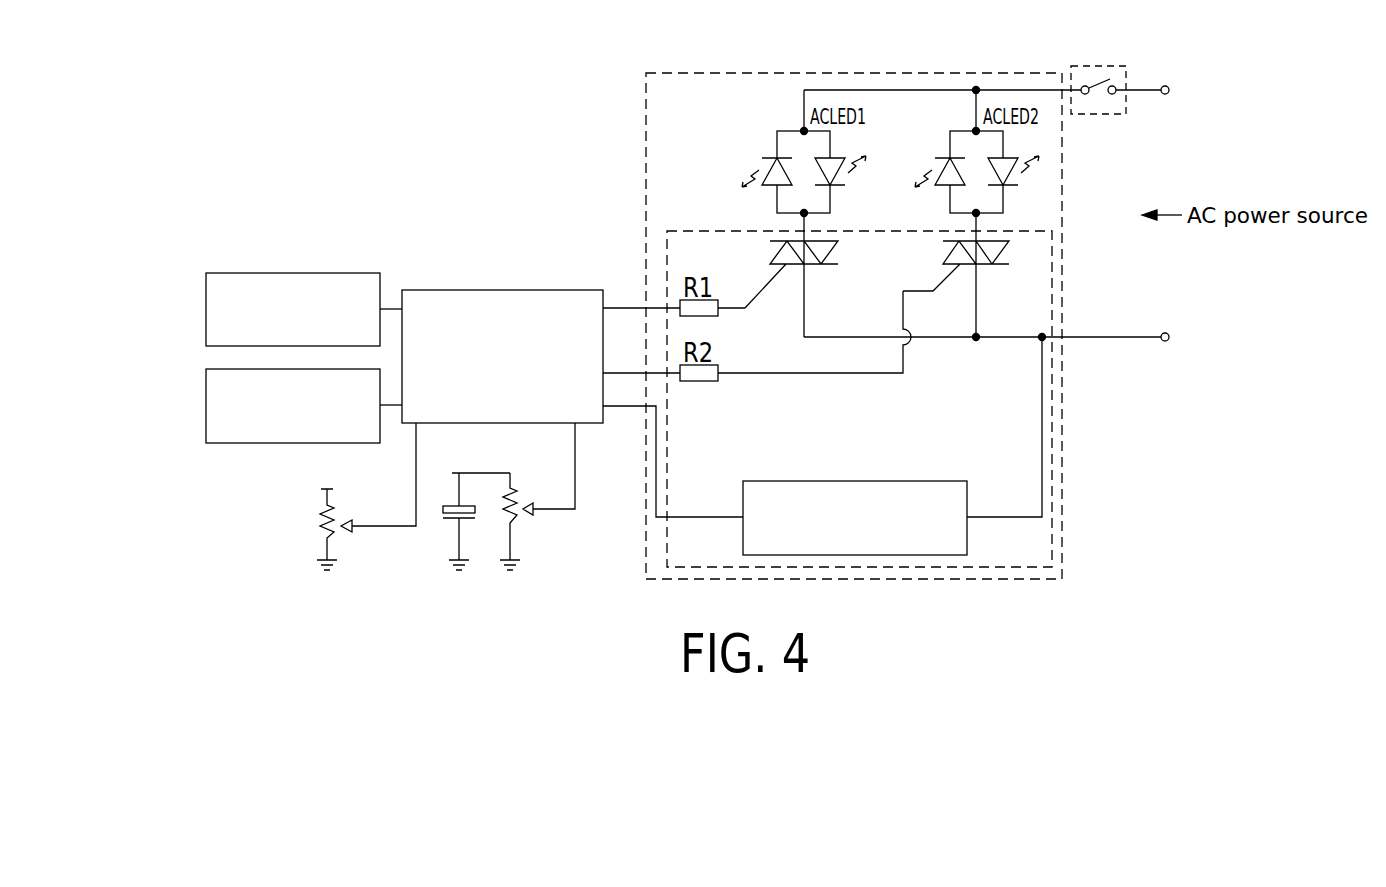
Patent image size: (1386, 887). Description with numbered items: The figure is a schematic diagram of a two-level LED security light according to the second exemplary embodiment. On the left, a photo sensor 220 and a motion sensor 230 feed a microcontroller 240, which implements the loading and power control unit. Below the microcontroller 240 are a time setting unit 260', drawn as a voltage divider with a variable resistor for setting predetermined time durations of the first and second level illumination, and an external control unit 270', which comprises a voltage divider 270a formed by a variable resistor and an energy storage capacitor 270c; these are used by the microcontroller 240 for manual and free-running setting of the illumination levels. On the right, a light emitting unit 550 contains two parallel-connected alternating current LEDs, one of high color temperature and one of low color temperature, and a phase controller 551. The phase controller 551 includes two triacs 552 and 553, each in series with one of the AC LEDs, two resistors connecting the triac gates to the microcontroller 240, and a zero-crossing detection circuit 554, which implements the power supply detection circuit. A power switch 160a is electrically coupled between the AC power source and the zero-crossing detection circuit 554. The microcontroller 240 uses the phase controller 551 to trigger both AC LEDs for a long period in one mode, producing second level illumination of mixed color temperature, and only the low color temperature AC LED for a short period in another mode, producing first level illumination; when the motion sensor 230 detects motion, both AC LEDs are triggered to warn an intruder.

The photo sensor 220 is at (206, 308).
The motion sensor 230 is at (206, 404).
The microcontroller 240 is at (503, 290).
The time setting unit 260' is at (323, 496).
The external control unit 270' is at (447, 568).
The voltage divider 270a is at (530, 514).
The energy storage capacitor 270c is at (450, 525).
The light emitting unit 550 is at (646, 111).
The phase controller 551 is at (696, 230).
The triac 552 is at (813, 267).
The triac 553 is at (987, 267).
The zero-crossing detection circuit 554 is at (855, 481).
The power switch 160a is at (1100, 66).